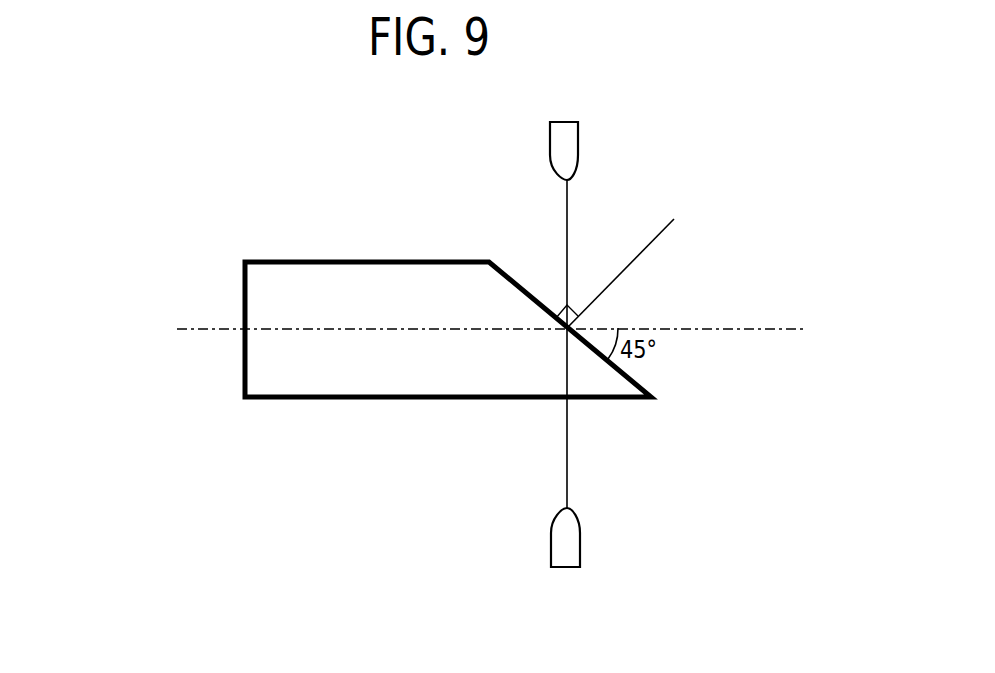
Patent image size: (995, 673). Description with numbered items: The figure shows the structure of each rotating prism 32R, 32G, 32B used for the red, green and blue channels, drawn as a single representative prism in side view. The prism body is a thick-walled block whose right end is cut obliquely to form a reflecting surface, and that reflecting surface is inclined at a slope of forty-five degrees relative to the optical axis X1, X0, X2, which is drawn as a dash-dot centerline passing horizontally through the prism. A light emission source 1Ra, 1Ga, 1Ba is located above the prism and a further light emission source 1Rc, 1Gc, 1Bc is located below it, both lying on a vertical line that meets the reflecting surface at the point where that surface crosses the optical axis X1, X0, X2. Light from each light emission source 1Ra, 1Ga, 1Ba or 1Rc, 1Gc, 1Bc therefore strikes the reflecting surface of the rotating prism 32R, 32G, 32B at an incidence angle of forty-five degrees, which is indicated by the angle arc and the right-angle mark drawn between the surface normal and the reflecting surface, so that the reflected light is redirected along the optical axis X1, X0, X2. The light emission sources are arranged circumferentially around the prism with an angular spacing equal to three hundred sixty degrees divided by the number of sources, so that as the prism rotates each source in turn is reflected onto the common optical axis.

The red light source (first position) 1Ra is at (661, 144).
The green light source (first position) 1Ga is at (661, 144).
The blue light source (first position) 1Ba is at (578, 147).
The red light source (second position) 1Rc is at (662, 543).
The green light source (second position) 1Gc is at (662, 543).
The blue light source (second position) 1Bc is at (580, 548).
The rotating prism 32R is at (341, 327).
The rotating prism 32G is at (341, 327).
The rotating prism 32B is at (243, 285).
The optical axis X1 is at (428, 331).
The optical axis X0 is at (428, 331).
The optical axis X2 is at (428, 331).